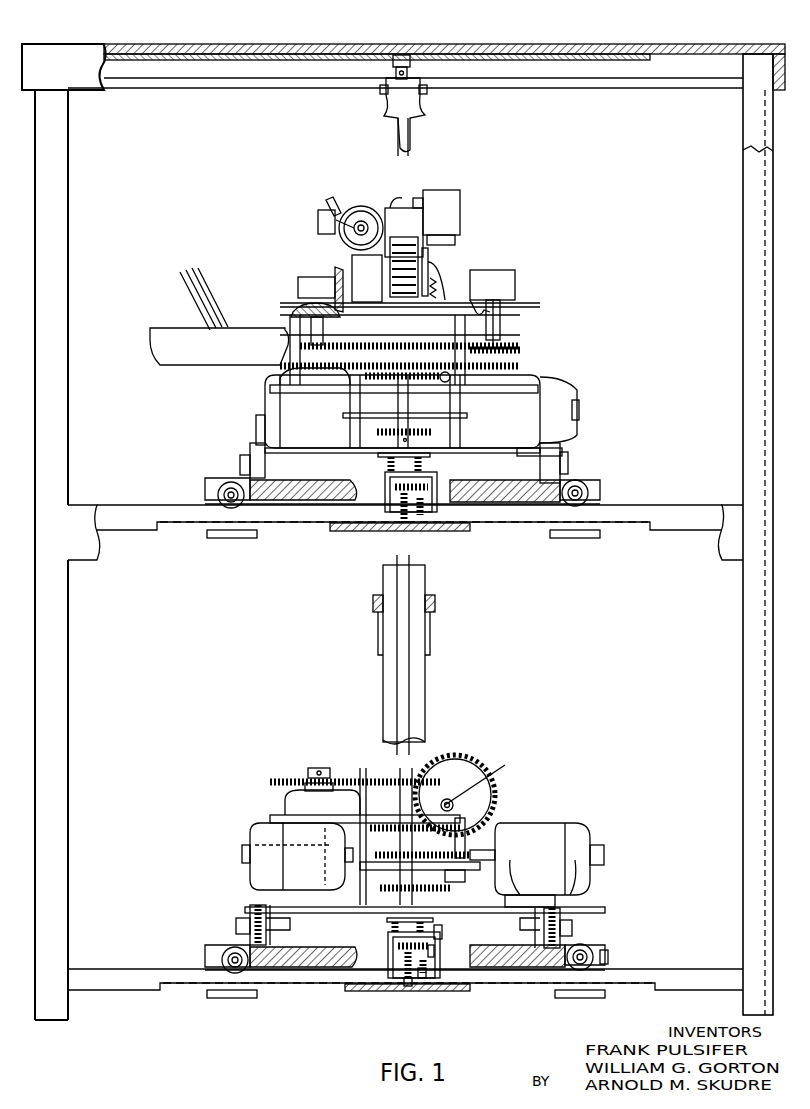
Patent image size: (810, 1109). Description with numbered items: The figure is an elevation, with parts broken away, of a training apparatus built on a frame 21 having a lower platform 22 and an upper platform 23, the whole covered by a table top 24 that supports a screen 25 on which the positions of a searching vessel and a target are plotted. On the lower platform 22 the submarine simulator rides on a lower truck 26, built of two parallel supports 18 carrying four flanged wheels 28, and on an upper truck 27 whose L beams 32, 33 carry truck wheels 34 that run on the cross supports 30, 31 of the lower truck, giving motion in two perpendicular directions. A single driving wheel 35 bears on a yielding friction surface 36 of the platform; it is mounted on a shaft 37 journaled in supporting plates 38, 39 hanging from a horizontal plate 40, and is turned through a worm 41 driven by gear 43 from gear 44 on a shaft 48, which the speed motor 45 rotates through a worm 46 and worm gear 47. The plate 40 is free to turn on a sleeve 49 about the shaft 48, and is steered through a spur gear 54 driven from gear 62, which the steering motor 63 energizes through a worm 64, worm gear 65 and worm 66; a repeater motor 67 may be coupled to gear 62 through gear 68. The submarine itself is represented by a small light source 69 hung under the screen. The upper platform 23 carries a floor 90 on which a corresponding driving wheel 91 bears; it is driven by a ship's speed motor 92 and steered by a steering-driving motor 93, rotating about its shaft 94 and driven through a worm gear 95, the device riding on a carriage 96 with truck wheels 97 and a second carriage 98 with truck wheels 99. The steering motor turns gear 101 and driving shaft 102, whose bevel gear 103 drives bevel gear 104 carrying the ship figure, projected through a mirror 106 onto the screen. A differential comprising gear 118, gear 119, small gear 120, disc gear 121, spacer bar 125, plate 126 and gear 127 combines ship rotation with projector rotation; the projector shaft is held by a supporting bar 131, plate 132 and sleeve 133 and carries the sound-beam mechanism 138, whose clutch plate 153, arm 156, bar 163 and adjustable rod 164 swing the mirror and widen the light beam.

The parallel supports 18 is at (570, 938).
The frame 21 is at (760, 522).
The lower platform 22 is at (678, 970).
The upper platform 23 is at (668, 508).
The table top 24 is at (676, 47).
The screen 25 is at (572, 52).
The lower truck 26 is at (608, 960).
The upper truck 27 is at (300, 913).
The wheels 28 is at (228, 950).
The cross support 30 is at (555, 958).
The cross support 31 is at (238, 935).
The L beam 32 is at (276, 928).
The L beam 33 is at (532, 926).
The truck wheels 34 is at (252, 922).
The driving wheel 35 is at (408, 985).
The friction surface 36 is at (365, 978).
The shaft 37 is at (398, 947).
The supporting plate 38 is at (432, 963).
The supporting plate 39 is at (398, 963).
The horizontal plate 40 is at (434, 936).
The worm 41 is at (428, 972).
The gear 43 is at (436, 950).
The gear 44 is at (393, 942).
The motor 45 is at (258, 835).
The worm 46 is at (362, 870).
The worm gear 47 is at (440, 850).
The shaft 48 is at (530, 870).
The sleeve 49 is at (400, 916).
The spur gear 54 is at (430, 872).
The gear 62 is at (465, 760).
The motor 63 is at (585, 845).
The worm 64 is at (480, 855).
The worm gear 65 is at (500, 770).
The worm 66 is at (455, 805).
The repeater motor 67 is at (292, 800).
The gear 68 is at (285, 778).
The light source 69 is at (415, 65).
The floor 90 is at (455, 530).
The driving wheel 91 is at (398, 515).
The ship's speed motor 92 is at (565, 395).
The steering-driving motor 93 is at (275, 400).
The shaft 94 is at (395, 500).
The worm gear 95 is at (430, 530).
The carriage 96 is at (600, 488).
The truck wheels 97 is at (225, 488).
The carriage 98 is at (555, 450).
The truck wheels 99 is at (254, 445).
The gear 101 is at (280, 366).
The driving shaft 102 is at (300, 346).
The bevel gear 103 is at (300, 310).
The bevel gear 104 is at (337, 268).
The mirror 106 is at (190, 272).
The gear 118 is at (400, 328).
The gear 119 is at (400, 336).
The small gear 120 is at (490, 350).
The disc gear 121 is at (480, 368).
The spacer bar 125 is at (378, 320).
The plate 126 is at (430, 302).
The gear 127 is at (440, 330).
The supporting bar 131 is at (500, 318).
The plate 132 is at (448, 320).
The sleeve 133 is at (400, 240).
The mechanism 138 is at (415, 300).
The plate 153 is at (390, 210).
The arm 156 is at (362, 224).
The bar 163 is at (320, 215).
The adjustable rod 164 is at (330, 200).